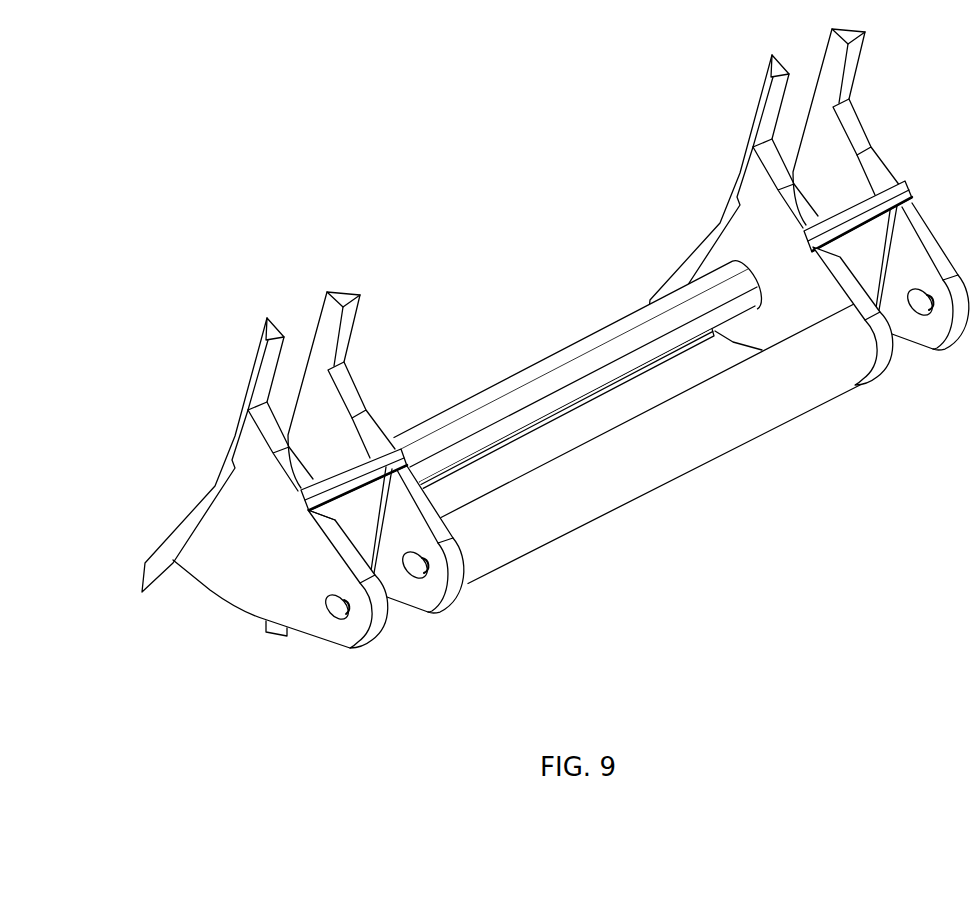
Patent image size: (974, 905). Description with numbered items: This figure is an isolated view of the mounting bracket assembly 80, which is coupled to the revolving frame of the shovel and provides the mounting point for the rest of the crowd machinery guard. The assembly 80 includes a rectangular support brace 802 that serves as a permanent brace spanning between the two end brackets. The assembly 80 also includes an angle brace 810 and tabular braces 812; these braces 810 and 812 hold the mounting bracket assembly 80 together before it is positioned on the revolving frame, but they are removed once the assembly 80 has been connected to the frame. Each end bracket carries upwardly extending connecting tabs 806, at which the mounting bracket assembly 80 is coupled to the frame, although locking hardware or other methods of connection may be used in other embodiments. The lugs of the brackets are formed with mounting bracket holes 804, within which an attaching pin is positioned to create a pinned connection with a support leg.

The mounting bracket assembly 80 is at (555, 356).
The rectangular support brace 802 is at (537, 368).
The mounting bracket holes 804 is at (334, 610).
The connecting tabs 806 is at (265, 373).
The angle brace 810 is at (567, 518).
The tabular braces 812 is at (356, 466).